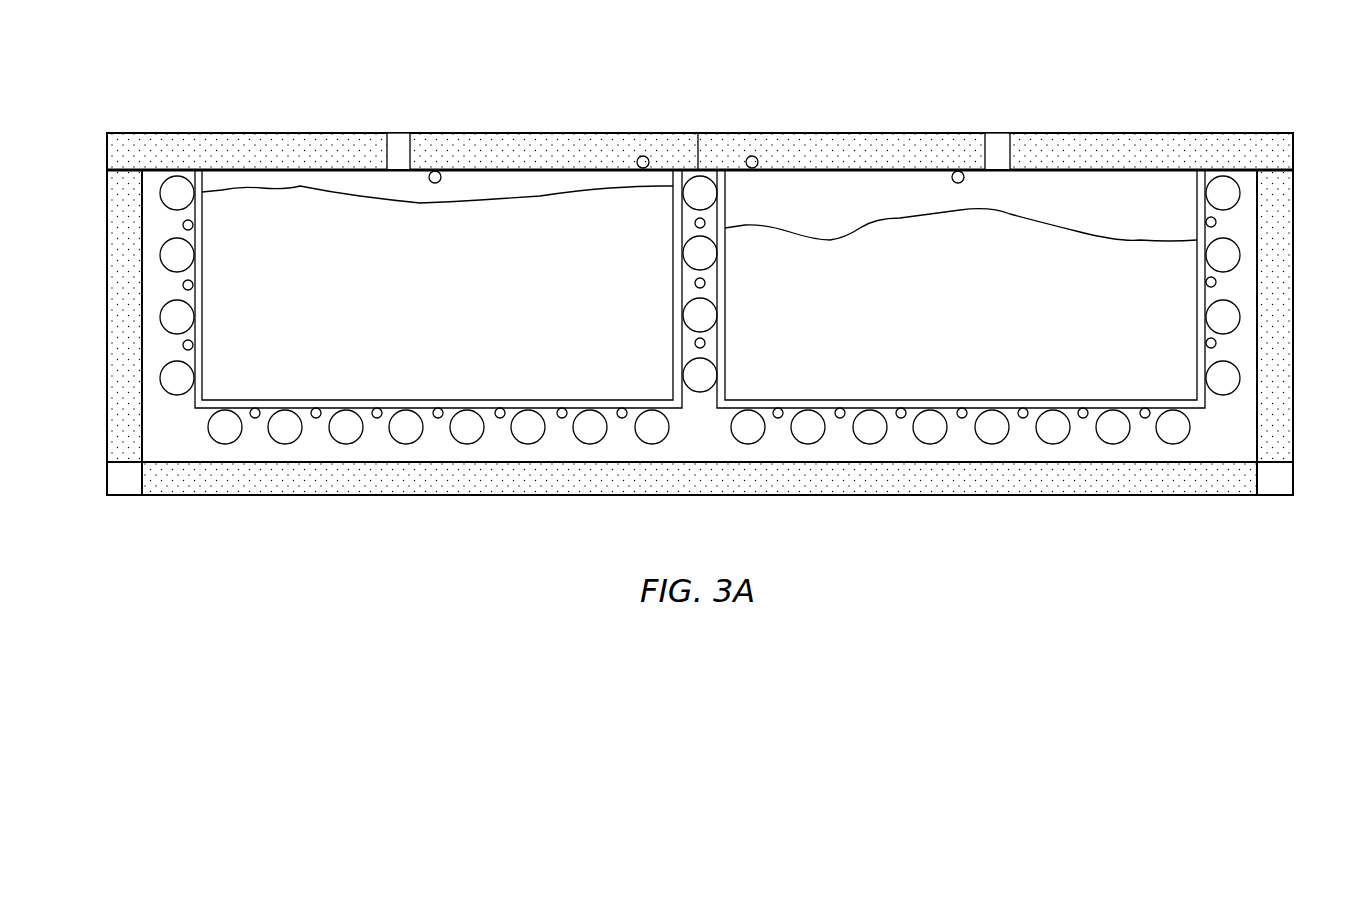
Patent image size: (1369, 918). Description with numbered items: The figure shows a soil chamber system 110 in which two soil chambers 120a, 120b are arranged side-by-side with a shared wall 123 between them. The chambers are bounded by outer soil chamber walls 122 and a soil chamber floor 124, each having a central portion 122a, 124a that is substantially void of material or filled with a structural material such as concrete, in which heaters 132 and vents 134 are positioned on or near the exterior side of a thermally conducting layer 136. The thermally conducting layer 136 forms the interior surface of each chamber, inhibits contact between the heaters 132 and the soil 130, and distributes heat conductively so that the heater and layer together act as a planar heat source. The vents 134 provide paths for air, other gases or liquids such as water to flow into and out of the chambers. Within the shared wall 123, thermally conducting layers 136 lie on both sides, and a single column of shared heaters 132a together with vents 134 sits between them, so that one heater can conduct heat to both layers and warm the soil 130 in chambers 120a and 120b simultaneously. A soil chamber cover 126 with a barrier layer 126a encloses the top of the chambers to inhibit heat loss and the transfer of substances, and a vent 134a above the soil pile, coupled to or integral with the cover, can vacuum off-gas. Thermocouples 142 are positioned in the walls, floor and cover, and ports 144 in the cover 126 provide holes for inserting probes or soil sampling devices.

The soil chamber system 110 is at (1150, 58).
The soil chamber 120a is at (340, 185).
The soil chamber 120b is at (1135, 185).
The soil chamber wall 122 is at (138, 282).
The shared wall 123 is at (690, 352).
The central portion of wall 122a is at (163, 348).
The soil chamber floor 124 is at (246, 468).
The central portion of floor 124a is at (470, 456).
The soil chamber cover 126 is at (478, 125).
The barrier layer 126a is at (580, 172).
The soil 130 is at (458, 281).
The heater 132 is at (180, 317).
The shared heater 132a is at (710, 232).
The vent 134 is at (193, 224).
The vent 134a is at (690, 160).
The thermally conducting layer 136 is at (203, 258).
The thermocouple 142 is at (641, 155).
The port 144 is at (397, 125).